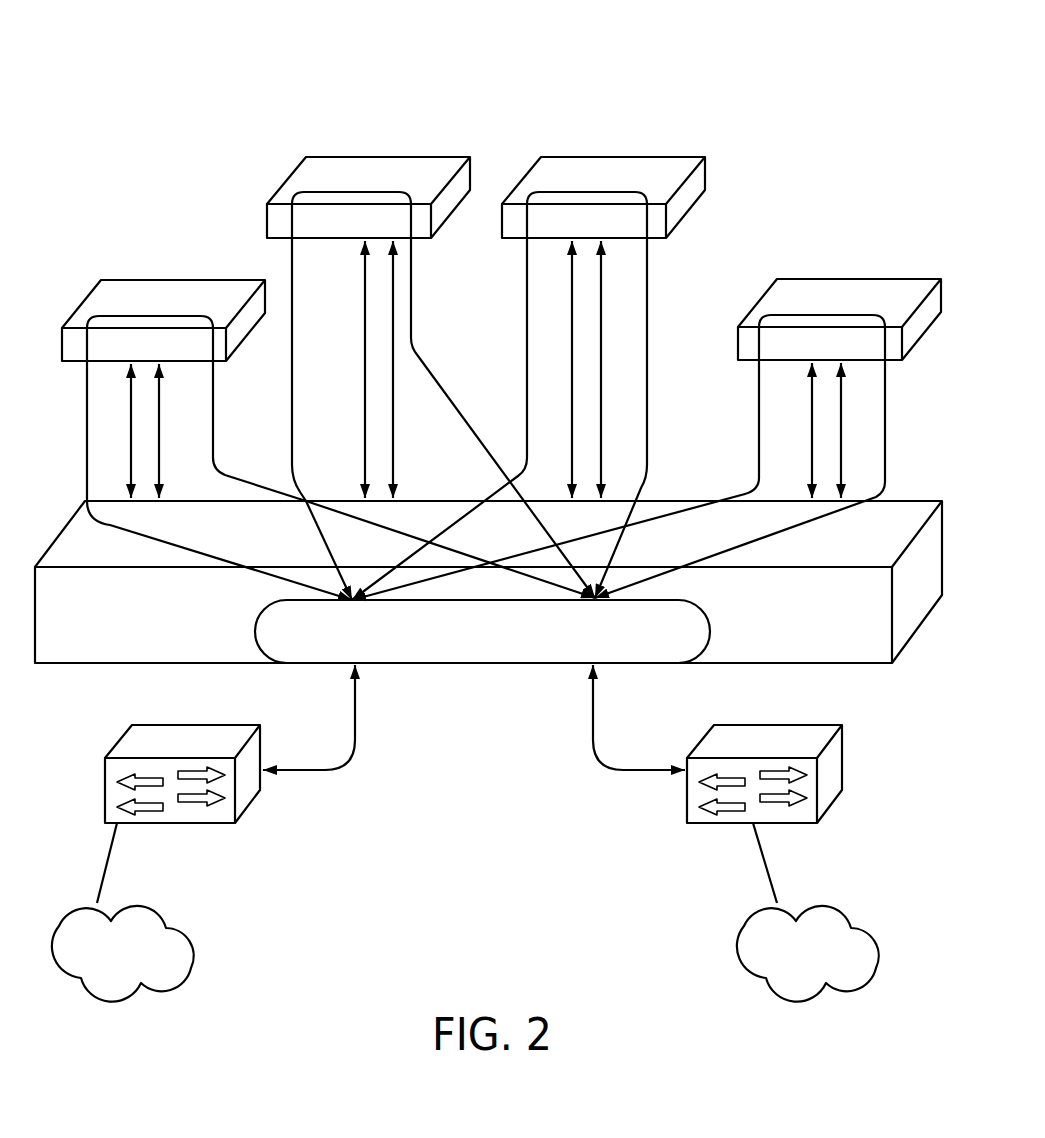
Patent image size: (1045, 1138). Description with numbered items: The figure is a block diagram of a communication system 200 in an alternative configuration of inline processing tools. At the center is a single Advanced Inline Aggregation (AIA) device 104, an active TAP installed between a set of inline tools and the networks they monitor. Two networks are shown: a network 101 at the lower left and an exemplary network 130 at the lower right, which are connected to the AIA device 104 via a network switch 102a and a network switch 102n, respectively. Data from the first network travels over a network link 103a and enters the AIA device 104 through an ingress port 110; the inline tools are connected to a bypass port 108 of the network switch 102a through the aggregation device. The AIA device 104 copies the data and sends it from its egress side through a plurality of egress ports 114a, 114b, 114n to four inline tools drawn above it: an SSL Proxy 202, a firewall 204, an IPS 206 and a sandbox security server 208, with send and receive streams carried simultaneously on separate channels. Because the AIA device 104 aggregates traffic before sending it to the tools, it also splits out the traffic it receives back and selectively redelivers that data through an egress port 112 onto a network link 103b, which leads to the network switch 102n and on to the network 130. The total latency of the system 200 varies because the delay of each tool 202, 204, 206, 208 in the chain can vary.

The communication system 200 is at (142, 93).
The network 101 is at (123, 912).
The network 130 is at (808, 912).
The network switch 102a is at (217, 825).
The network switch 102n is at (802, 825).
The network link 103a is at (338, 762).
The network link 103b is at (593, 727).
The Advanced Inline Aggregation (AIA) device 104 is at (917, 632).
The bypass port 108 is at (263, 757).
The ingress port 110 is at (354, 642).
The egress port 112 is at (593, 642).
The egress port 114a is at (85, 497).
The egress port 114b is at (306, 497).
The egress port 114n is at (882, 493).
The SSL Proxy 202 is at (147, 278).
The firewall 204 is at (353, 156).
The IPS 206 is at (590, 156).
The sandbox security server 208 is at (825, 278).